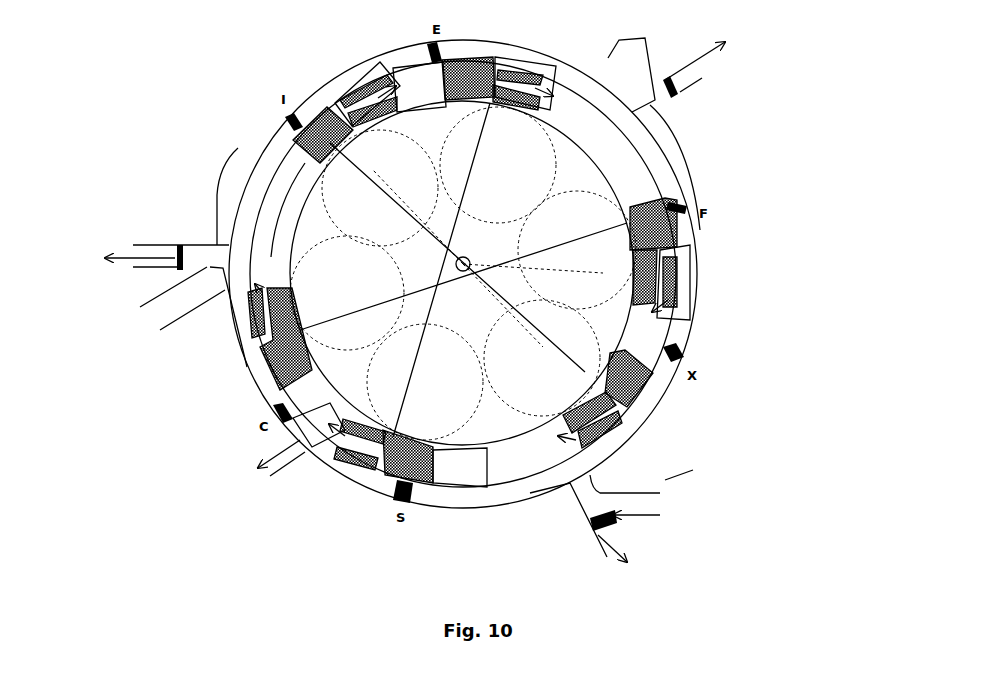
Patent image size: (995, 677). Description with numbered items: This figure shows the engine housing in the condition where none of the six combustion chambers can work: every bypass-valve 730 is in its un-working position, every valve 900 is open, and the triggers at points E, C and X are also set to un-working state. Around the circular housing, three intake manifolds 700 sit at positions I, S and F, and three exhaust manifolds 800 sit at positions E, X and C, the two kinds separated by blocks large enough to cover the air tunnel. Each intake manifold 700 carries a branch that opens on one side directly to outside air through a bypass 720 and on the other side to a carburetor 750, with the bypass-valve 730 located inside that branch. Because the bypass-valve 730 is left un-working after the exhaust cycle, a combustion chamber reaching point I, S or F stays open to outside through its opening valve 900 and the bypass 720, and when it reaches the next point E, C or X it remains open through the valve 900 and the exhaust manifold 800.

The intake manifold 700 is at (470, 46).
The bypass 720 is at (190, 288).
The bypass-valve 730 is at (180, 245).
The carburetor 750 is at (461, 302).
The exhaust manifold 800 is at (428, 46).
The valve 900 is at (562, 95).